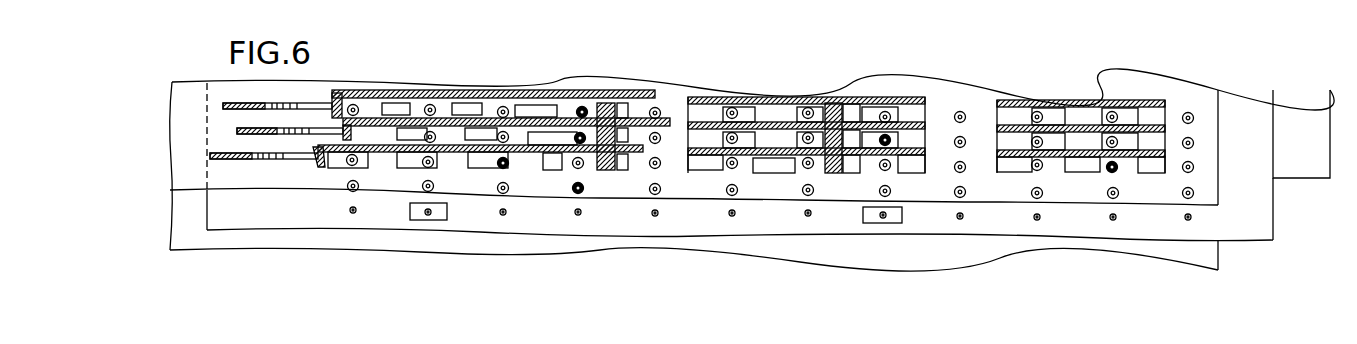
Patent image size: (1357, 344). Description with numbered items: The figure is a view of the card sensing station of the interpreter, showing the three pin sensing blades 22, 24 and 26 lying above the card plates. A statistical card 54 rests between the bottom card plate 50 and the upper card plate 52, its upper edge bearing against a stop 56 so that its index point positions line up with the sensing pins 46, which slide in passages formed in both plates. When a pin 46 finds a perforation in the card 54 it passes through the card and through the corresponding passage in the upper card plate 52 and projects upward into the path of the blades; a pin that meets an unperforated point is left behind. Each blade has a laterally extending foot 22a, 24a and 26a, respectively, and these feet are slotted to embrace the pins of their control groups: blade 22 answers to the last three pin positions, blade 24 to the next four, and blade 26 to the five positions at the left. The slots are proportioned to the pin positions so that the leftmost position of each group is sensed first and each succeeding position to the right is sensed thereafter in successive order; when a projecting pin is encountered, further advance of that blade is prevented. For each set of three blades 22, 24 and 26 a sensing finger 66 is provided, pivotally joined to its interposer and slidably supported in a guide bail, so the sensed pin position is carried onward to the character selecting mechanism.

The card sensing blade 22 is at (1062, 100).
The laterally extending foot 22a is at (1157, 117).
The card sensing blade 24 is at (780, 98).
The laterally extending foot 24a is at (913, 112).
The card sensing blade 26 is at (443, 92).
The laterally extending foot 26a is at (637, 108).
The pin 46 is at (573, 191).
The bottom card plate 50 is at (1207, 258).
The upper card plate 52 is at (1210, 138).
The statistical card 54 is at (1262, 218).
The stop 56 is at (1313, 153).
The sensing finger 66 is at (223, 106).